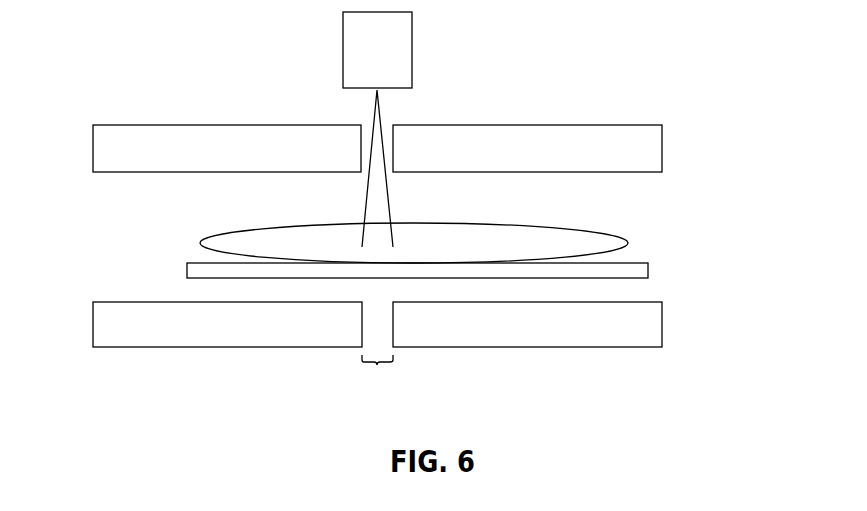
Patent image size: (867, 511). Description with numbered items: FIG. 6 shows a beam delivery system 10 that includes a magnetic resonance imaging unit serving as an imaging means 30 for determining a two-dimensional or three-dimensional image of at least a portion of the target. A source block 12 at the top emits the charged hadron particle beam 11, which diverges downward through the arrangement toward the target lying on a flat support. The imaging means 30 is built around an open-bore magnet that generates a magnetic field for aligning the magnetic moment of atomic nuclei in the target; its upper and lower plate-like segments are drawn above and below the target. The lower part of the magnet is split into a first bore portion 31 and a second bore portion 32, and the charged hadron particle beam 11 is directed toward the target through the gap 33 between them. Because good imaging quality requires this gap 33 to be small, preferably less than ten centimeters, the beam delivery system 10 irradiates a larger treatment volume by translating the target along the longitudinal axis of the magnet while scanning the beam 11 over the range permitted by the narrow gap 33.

The beam delivery system 10 is at (124, 62).
The charged hadron particle beam 11 is at (386, 194).
The ion source 12 is at (412, 80).
The imaging means 30 is at (652, 100).
The first bore portion 31 is at (122, 348).
The second bore portion 32 is at (515, 348).
The gap 33 is at (378, 366).